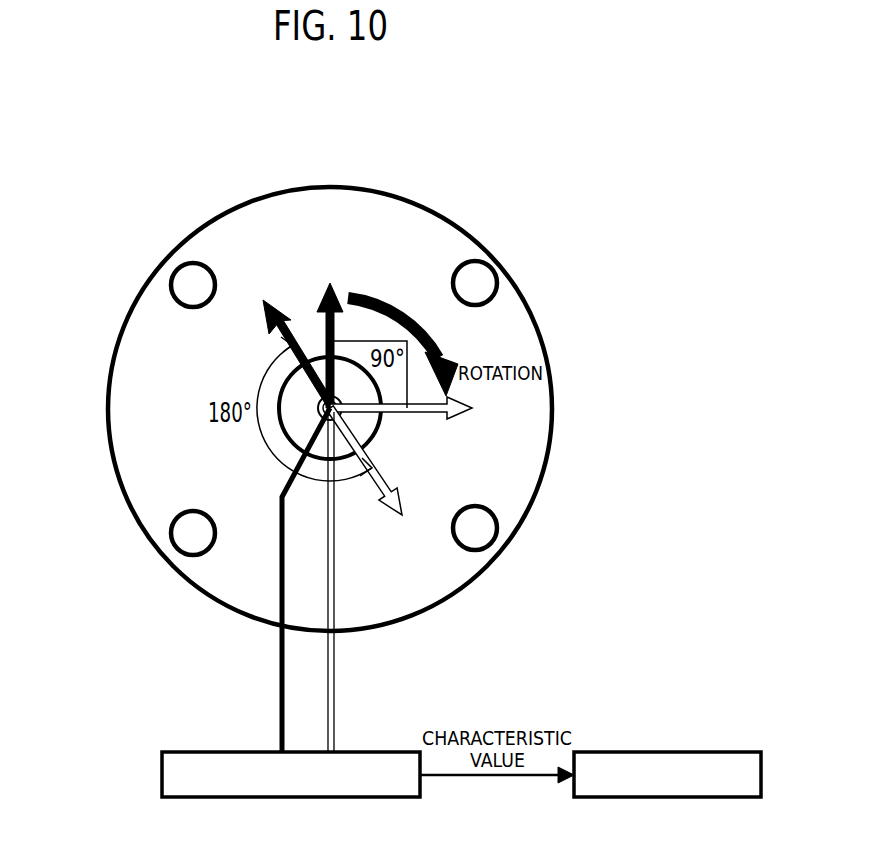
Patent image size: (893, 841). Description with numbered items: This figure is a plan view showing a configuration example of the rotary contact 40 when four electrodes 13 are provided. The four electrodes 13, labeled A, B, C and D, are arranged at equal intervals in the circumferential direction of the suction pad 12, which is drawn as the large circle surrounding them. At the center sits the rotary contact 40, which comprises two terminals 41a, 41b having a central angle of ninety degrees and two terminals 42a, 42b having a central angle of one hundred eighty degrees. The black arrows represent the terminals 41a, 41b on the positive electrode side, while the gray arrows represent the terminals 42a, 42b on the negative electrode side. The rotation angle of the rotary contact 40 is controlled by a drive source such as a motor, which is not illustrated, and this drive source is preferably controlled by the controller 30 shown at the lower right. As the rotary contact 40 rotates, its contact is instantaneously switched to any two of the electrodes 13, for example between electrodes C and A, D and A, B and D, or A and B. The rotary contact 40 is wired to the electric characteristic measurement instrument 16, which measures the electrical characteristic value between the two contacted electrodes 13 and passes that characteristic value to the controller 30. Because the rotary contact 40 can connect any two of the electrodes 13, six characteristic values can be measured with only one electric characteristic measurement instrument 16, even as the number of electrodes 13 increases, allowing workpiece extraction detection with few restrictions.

The suction pad 12 is at (508, 333).
The electrode 13 is at (196, 262).
The electric characteristic measurement instrument 16 is at (379, 752).
The controller 30 is at (672, 752).
The rotary contact 40 is at (421, 416).
The terminal 41a is at (325, 326).
The terminal 41b is at (400, 414).
The terminal 42a is at (278, 331).
The terminal 42b is at (383, 490).